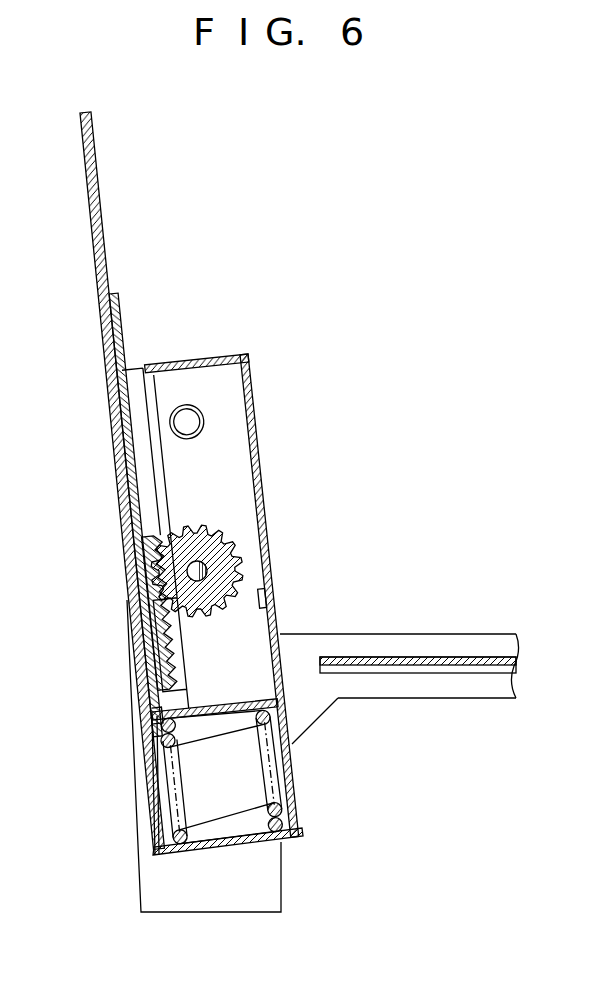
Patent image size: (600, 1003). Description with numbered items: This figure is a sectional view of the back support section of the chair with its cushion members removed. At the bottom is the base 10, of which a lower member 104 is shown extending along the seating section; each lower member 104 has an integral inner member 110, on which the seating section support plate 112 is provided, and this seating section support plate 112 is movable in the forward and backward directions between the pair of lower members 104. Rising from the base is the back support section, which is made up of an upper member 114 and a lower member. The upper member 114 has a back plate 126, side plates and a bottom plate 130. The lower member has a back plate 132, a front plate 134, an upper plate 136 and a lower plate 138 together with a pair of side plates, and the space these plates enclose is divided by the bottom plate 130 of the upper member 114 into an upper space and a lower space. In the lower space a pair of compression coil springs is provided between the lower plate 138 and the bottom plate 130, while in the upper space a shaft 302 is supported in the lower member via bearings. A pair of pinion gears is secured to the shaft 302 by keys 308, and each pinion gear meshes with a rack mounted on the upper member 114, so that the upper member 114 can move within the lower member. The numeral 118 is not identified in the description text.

The base 10 is at (271, 916).
The lower member 104 is at (192, 905).
The inner member 110 is at (459, 672).
The seating section support plate 112 is at (387, 665).
The upper member 114 is at (91, 227).
The housing bottom wall 118 is at (293, 842).
The back plate 126 is at (128, 515).
The bottom plate 130 is at (215, 713).
The back plate 132 is at (148, 789).
The front plate 134 is at (263, 484).
The upper plate 136 is at (197, 358).
The lower plate 138 is at (265, 843).
The shaft 302 is at (200, 581).
The key 308 is at (195, 528).